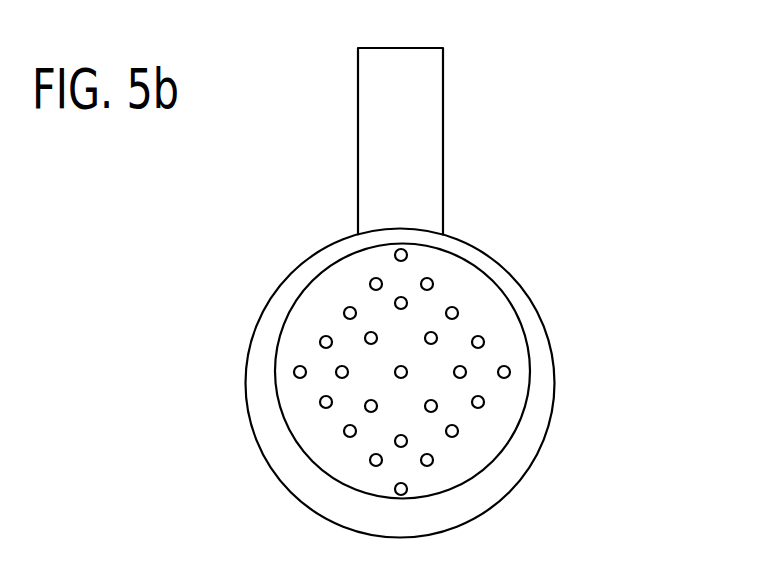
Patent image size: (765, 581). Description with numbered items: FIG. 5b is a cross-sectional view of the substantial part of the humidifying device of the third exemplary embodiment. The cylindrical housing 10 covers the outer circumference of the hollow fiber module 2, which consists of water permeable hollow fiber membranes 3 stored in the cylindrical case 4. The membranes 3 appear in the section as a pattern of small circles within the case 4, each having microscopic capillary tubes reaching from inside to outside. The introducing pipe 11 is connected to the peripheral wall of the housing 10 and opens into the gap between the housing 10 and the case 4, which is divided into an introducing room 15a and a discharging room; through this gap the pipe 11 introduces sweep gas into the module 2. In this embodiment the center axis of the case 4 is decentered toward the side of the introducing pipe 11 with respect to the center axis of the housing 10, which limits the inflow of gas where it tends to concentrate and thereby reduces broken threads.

The hollow fiber module 2 is at (410, 396).
The hollow fiber membranes 3 is at (453, 432).
The case 4 is at (529, 369).
The housing 10 is at (543, 330).
The introducing pipe 11 is at (443, 140).
The introducing room 15a is at (256, 361).